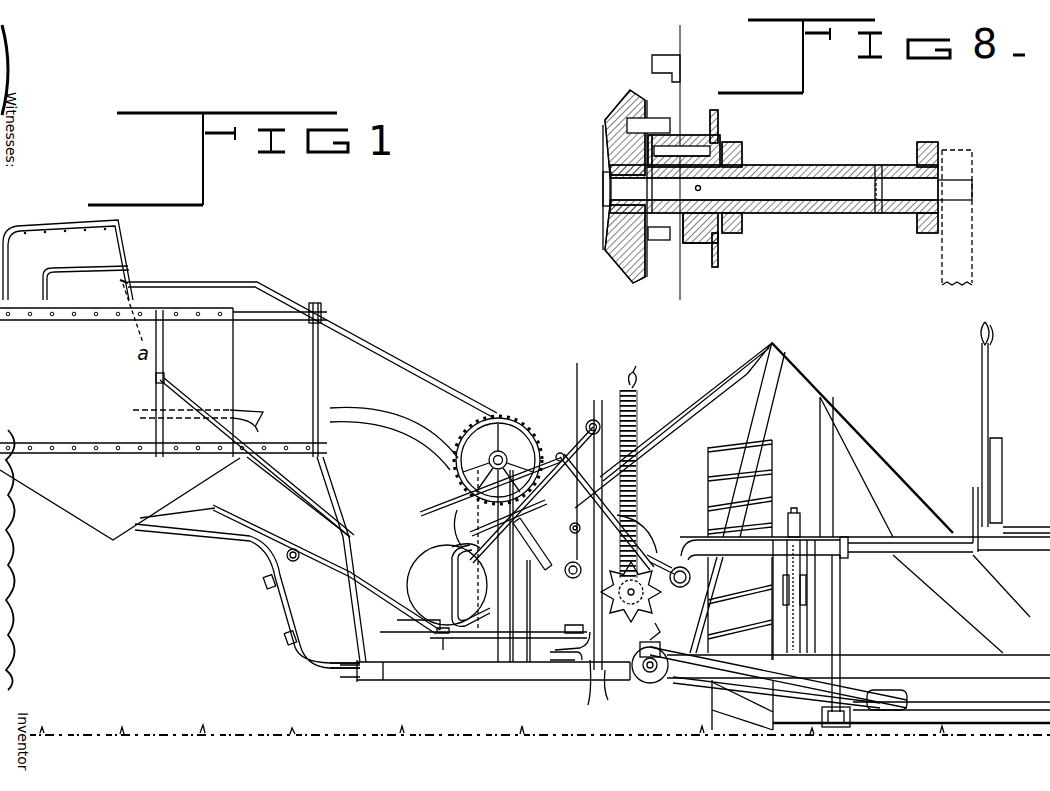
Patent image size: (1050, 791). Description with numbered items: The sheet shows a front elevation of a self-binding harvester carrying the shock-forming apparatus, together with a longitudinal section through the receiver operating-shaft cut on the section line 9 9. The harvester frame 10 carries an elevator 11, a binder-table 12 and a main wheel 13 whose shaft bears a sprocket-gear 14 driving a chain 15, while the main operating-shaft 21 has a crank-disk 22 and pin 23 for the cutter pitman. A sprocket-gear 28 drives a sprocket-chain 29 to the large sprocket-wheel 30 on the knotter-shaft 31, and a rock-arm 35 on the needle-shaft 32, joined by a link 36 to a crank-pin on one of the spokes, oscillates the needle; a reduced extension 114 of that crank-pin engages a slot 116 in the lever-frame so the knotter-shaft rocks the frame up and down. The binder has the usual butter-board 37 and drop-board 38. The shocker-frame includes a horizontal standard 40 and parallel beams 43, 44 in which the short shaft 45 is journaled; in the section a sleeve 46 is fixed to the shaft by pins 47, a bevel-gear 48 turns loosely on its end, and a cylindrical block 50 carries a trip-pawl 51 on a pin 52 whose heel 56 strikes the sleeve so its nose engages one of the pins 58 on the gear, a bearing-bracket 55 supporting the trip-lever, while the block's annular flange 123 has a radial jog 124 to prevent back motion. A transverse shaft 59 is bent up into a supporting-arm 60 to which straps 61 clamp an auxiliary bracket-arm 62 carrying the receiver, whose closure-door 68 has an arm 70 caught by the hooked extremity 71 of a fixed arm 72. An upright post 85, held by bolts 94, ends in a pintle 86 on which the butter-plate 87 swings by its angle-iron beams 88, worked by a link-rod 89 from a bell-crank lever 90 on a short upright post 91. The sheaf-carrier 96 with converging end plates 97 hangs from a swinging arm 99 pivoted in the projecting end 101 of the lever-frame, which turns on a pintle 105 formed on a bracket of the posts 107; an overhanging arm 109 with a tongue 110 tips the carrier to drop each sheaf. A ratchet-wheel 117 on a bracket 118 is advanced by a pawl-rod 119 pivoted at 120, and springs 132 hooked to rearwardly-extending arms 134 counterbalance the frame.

In FIG. 8, the section line 9 9 is at (681, 163).
In FIG. 1, the frame 10 is at (892, 655).
In FIG. 1, the elevator 11 is at (900, 482).
In FIG. 1, the binder-table 12 is at (692, 470).
In FIG. 1, the main wheel 13 is at (772, 485).
In FIG. 1, the sprocket-gear 14 is at (800, 513).
In FIG. 1, the chain 15 is at (800, 625).
In FIG. 1, the main operating-shaft 21 is at (668, 680).
In FIG. 1, the crank-disk 22 is at (647, 684).
In FIG. 1, the pin 23 is at (680, 660).
In FIG. 1, the sprocket-gear 28 is at (624, 620).
In FIG. 1, the sprocket-chain 29 is at (460, 428).
In FIG. 1, the sprocket-wheel 30 is at (500, 414).
In FIG. 1, the knotter-shaft 31 is at (489, 462).
In FIG. 1, the needle-shaft 32 is at (560, 592).
In FIG. 1, the rock-arm 35 is at (568, 564).
In FIG. 1, the link 36 is at (572, 522).
In FIG. 1, the butter-board 37 is at (745, 395).
In FIG. 1, the drop-board 38 is at (508, 611).
In FIG. 1, the horizontal standard 40 is at (430, 680).
In FIG. 8, the parallel beam 43 is at (742, 229).
In FIG. 8, the parallel beam 44 is at (922, 234).
In FIG. 8, the short horizontal shaft 45 is at (770, 189).
In FIG. 8, the sleeve 46 is at (858, 214).
In FIG. 8, the diametrical pins 47 is at (701, 188).
In FIG. 8, the bevel-gear 48 is at (603, 230).
In FIG. 8, the cylindrical block 50 is at (700, 238).
In FIG. 8, the trip-pawl 51 is at (685, 146).
In FIG. 8, the pin 52 is at (720, 148).
In FIG. 8, the bearing-bracket 55 is at (682, 80).
In FIG. 8, the heel 56 is at (652, 120).
In FIG. 1, the pins 58 is at (475, 550).
In FIG. 8, the pins 58 is at (660, 241).
In FIG. 1, the shaft 59 is at (345, 680).
In FIG. 1, the supporting-arm 60 is at (243, 538).
In FIG. 1, the straps 61 is at (263, 585).
In FIG. 1, the auxiliary bracket-arm 62 is at (182, 526).
In FIG. 1, the closure-door 68 is at (108, 238).
In FIG. 1, the rearwardly-projecting arm 70 is at (132, 278).
In FIG. 1, the hooked extremity 71 is at (122, 283).
In FIG. 1, the horizontally-extending arm 72 is at (265, 282).
In FIG. 1, the upright post 85 is at (340, 512).
In FIG. 1, the pintle 86 is at (322, 384).
In FIG. 1, the butter-plate 87 is at (120, 424).
In FIG. 1, the horizontal angle-iron beams 88 is at (97, 322).
In FIG. 1, the link-rod 89 is at (300, 495).
In FIG. 1, the bell-crank lever 90 is at (156, 378).
In FIG. 1, the short upright post 91 is at (568, 670).
In FIG. 1, the bolts 94 is at (348, 663).
In FIG. 1, the sheaf-carrier 96 is at (410, 562).
In FIG. 1, the converging end plates 97 is at (452, 548).
In FIG. 1, the swinging arm 99 is at (395, 612).
In FIG. 1, the projecting end 101 is at (296, 562).
In FIG. 1, the pintle 105 is at (593, 420).
In FIG. 1, the upstanding posts 107 is at (590, 700).
In FIG. 1, the overhanging arm 109 is at (243, 410).
In FIG. 1, the downwardly-extending tongue 110 is at (247, 528).
In FIG. 1, the reduced extension 114 is at (480, 498).
In FIG. 1, the slot 116 is at (500, 515).
In FIG. 1, the ratchet-wheel 117 is at (652, 622).
In FIG. 1, the bracket 118 is at (610, 672).
In FIG. 1, the pawl-rod 119 is at (650, 540).
In FIG. 1, the pivot 120 is at (580, 400).
In FIG. 8, the annular flange 123 is at (718, 258).
In FIG. 8, the radial jog 124 is at (718, 120).
In FIG. 1, the springs 132 is at (640, 432).
In FIG. 1, the rearwardly-extending arms 134 is at (632, 382).